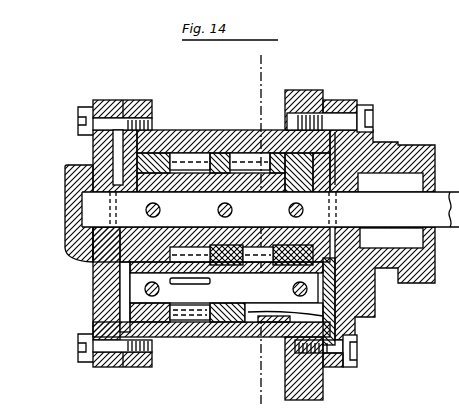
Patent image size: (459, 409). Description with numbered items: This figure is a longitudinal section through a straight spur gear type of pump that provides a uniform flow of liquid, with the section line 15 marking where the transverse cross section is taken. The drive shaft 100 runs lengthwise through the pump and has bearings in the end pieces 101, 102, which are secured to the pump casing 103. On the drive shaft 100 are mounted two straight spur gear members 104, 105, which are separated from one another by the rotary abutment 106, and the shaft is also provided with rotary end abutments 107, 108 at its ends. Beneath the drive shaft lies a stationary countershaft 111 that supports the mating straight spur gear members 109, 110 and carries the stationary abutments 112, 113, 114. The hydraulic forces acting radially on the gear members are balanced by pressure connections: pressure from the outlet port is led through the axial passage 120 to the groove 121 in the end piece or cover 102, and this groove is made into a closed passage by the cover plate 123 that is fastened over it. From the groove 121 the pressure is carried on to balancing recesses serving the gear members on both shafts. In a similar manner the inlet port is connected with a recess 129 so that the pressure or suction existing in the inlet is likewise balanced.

The drive shaft 100 is at (270, 209).
The end piece 101 is at (374, 143).
The end piece 102 is at (66, 200).
The pump casing 103 is at (188, 173).
The straight spur gear member 104 is at (266, 170).
The straight spur gear member 105 is at (200, 152).
The rotary abutment 106 is at (228, 152).
The rotary end abutment 107 is at (330, 104).
The rotary end abutment 108 is at (158, 135).
The straight spur gear member 109 is at (252, 323).
The straight spur gear member 110 is at (187, 323).
The stationary countershaft 111 is at (140, 281).
The stationary abutment 112 is at (336, 322).
The stationary abutment 113 is at (218, 323).
The stationary abutment 114 is at (128, 317).
The axial passage 120 is at (90, 262).
The groove 121 is at (93, 142).
The cover plate 123 is at (119, 112).
The recess 129 is at (291, 318).
The section line 15 is at (250, 77).